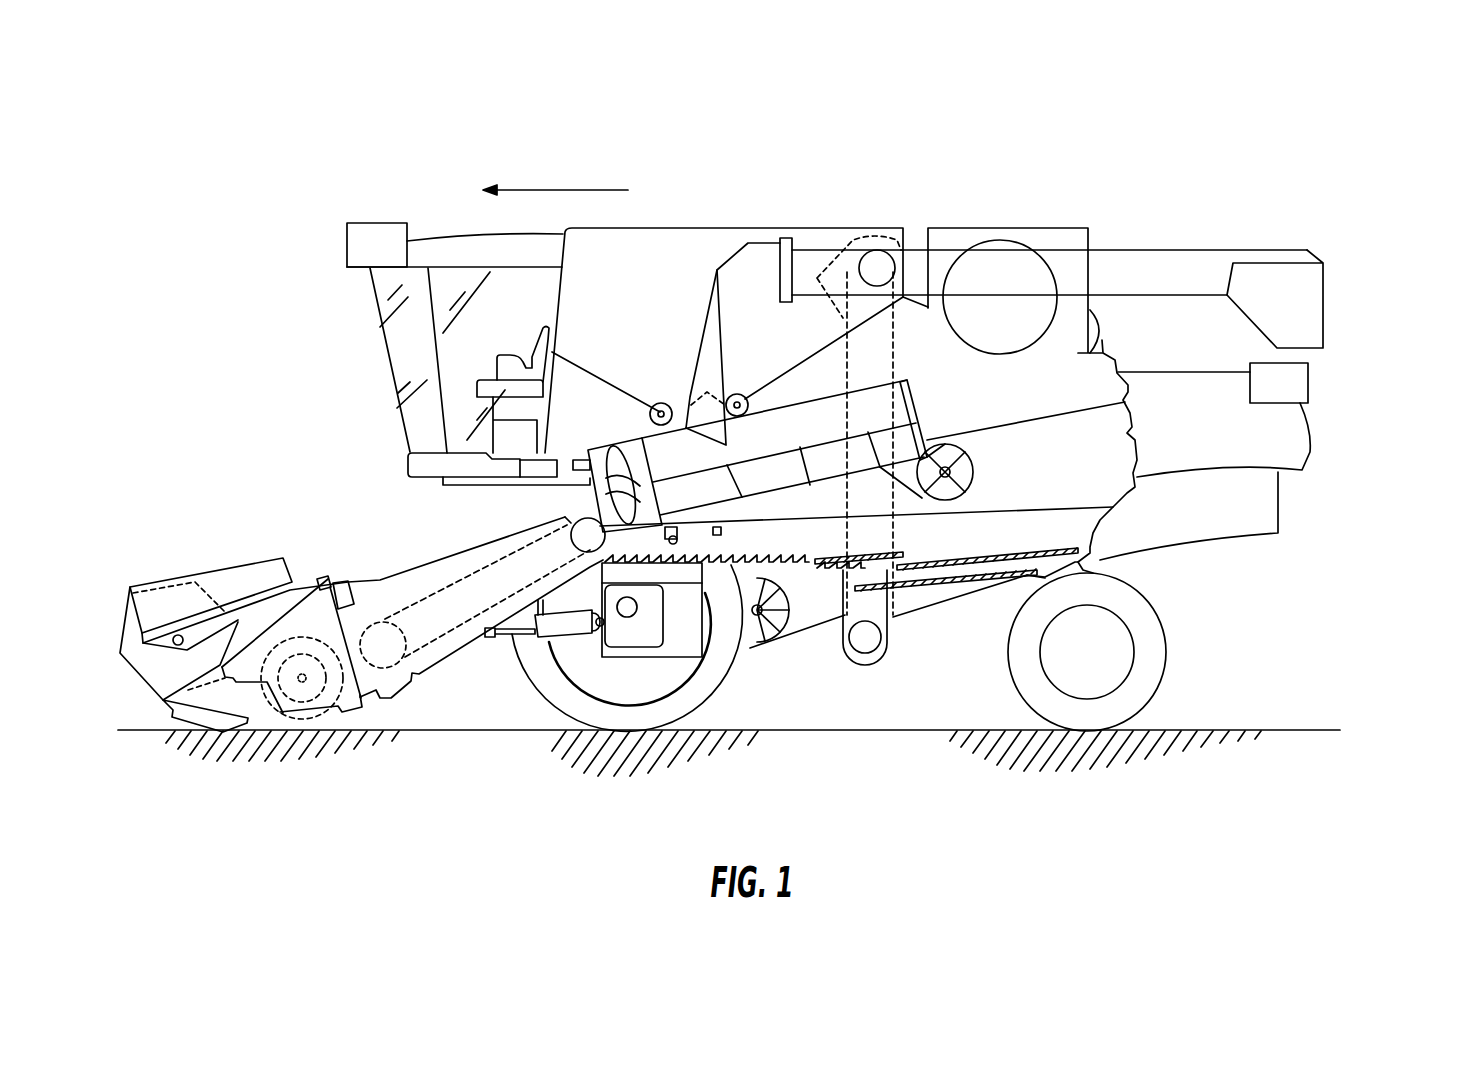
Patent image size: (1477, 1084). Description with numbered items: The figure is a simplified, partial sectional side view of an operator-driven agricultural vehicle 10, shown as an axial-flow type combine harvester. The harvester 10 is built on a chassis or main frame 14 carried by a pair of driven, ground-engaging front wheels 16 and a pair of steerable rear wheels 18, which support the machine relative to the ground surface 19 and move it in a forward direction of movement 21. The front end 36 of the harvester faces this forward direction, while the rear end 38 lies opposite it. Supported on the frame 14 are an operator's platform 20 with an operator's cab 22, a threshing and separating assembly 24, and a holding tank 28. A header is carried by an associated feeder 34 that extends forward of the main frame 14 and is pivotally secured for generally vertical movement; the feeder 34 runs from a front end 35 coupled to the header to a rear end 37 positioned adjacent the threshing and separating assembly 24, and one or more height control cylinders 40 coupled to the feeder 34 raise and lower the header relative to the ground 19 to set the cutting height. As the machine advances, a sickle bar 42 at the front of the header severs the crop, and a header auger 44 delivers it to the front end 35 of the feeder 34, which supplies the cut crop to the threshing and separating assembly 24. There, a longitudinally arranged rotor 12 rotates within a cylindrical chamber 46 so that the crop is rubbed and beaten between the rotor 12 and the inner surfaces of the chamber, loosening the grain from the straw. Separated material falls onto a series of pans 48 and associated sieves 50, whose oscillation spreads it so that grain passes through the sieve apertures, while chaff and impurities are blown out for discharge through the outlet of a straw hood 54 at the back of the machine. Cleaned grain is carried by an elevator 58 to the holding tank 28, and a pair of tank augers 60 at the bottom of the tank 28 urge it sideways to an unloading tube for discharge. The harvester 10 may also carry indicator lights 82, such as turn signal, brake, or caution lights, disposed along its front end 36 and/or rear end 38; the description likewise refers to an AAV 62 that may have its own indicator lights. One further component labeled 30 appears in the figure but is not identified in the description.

The operator-driven agricultural vehicle 10 is at (404, 180).
The rotor 12 is at (612, 444).
The chassis or main frame 14 is at (1093, 565).
The front wheels 16 is at (560, 700).
The rear wheels 18 is at (1157, 663).
The ground surface 19 is at (135, 729).
The operator's platform 20 is at (420, 465).
The forward direction of movement 21 is at (526, 190).
The operator's cab 22 is at (402, 352).
The threshing and separating assembly 24 is at (756, 449).
The holding tank 28 is at (657, 226).
The grain tank 30 is at (990, 237).
The feeder 34 is at (390, 555).
The front end of the feeder 35 is at (175, 572).
The front end of the harvester 36 is at (250, 370).
The rear end of the feeder 37 is at (570, 505).
The rear end of the harvester 38 is at (1378, 263).
The height control cylinders 40 is at (535, 637).
The sickle bar 42 is at (182, 713).
The header auger 44 is at (296, 712).
The cylindrical chamber 46 is at (818, 413).
The pans 48 is at (763, 553).
The sieves 50 is at (912, 558).
The straw hood 54 is at (1298, 442).
The elevator 58 is at (897, 342).
The tank augers 60 is at (662, 403).
The AAV 62 is at (1157, 262).
The indicator lights 82 is at (347, 243).